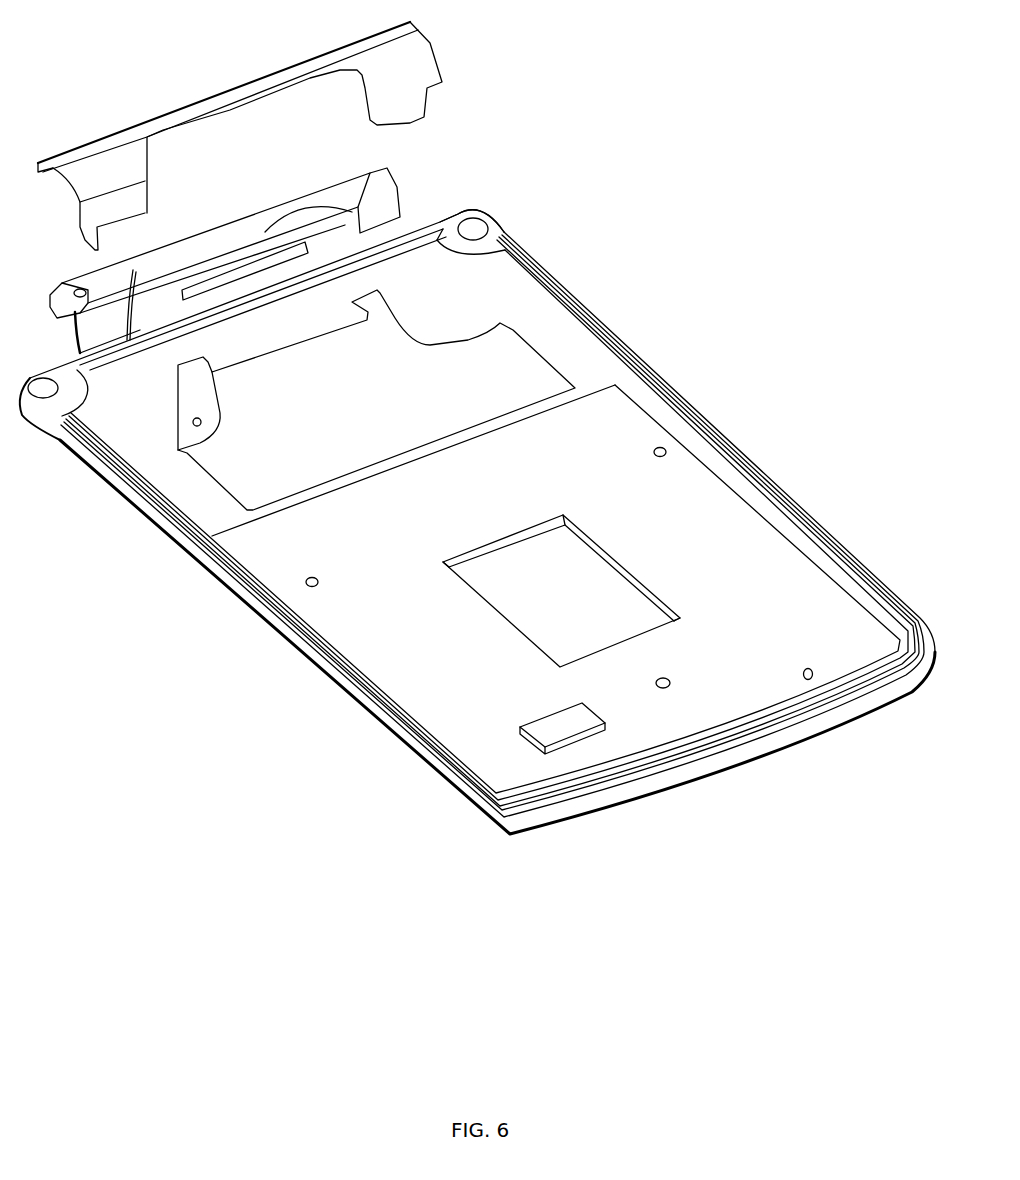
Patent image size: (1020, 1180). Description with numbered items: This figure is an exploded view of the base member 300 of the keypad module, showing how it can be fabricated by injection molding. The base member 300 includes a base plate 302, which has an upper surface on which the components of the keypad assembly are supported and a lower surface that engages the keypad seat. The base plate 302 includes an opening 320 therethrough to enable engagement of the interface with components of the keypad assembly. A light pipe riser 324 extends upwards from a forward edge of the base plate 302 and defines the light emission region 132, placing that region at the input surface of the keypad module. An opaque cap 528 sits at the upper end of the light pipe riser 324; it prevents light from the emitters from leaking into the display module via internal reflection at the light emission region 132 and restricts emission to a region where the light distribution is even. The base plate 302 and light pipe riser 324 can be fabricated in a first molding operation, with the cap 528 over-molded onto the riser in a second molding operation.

The base member 300 is at (683, 183).
The base plate 302 is at (307, 648).
The opening 320 is at (370, 414).
The light pipe riser 324 is at (403, 203).
The light emission region 132 is at (293, 222).
The opaque cap 528 is at (118, 135).